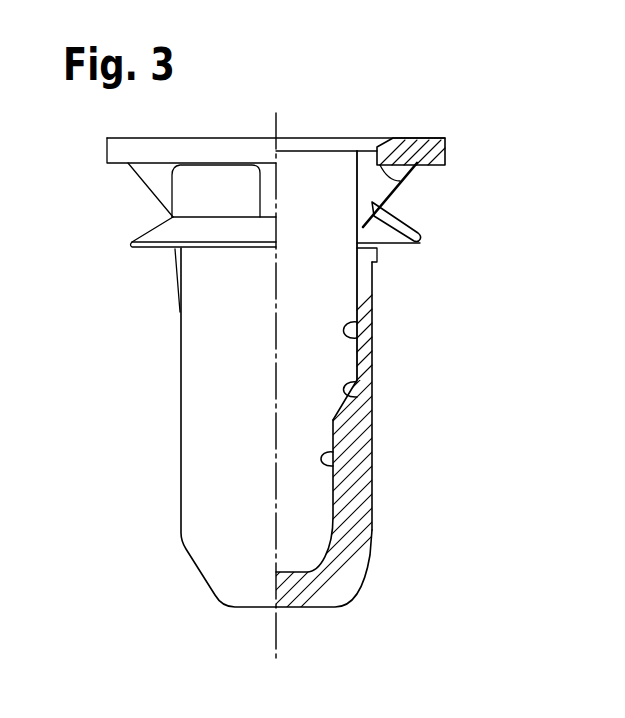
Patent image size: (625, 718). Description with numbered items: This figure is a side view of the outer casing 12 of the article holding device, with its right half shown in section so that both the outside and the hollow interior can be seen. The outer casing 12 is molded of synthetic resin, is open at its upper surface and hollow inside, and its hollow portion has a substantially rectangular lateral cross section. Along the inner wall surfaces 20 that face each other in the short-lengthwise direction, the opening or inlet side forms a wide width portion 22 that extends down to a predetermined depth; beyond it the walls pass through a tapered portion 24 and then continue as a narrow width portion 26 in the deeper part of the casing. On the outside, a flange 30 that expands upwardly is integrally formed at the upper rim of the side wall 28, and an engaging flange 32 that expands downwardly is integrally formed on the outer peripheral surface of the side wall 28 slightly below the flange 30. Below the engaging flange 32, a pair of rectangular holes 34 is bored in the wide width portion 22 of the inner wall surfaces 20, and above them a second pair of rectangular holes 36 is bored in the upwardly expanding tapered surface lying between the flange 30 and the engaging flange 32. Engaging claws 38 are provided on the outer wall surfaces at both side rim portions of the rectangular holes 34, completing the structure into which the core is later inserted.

The outer casing 12 is at (355, 120).
The inner wall surfaces 20 is at (311, 187).
The wide width portion 22 is at (358, 328).
The tapered portion 24 is at (360, 380).
The narrow width portion 26 is at (338, 452).
The side wall 28 is at (207, 402).
The flange 30 is at (446, 143).
The engaging flange 32 is at (412, 232).
The rectangular holes 34 is at (373, 290).
The rectangular holes 36 is at (400, 181).
The engaging claws 38 is at (378, 262).